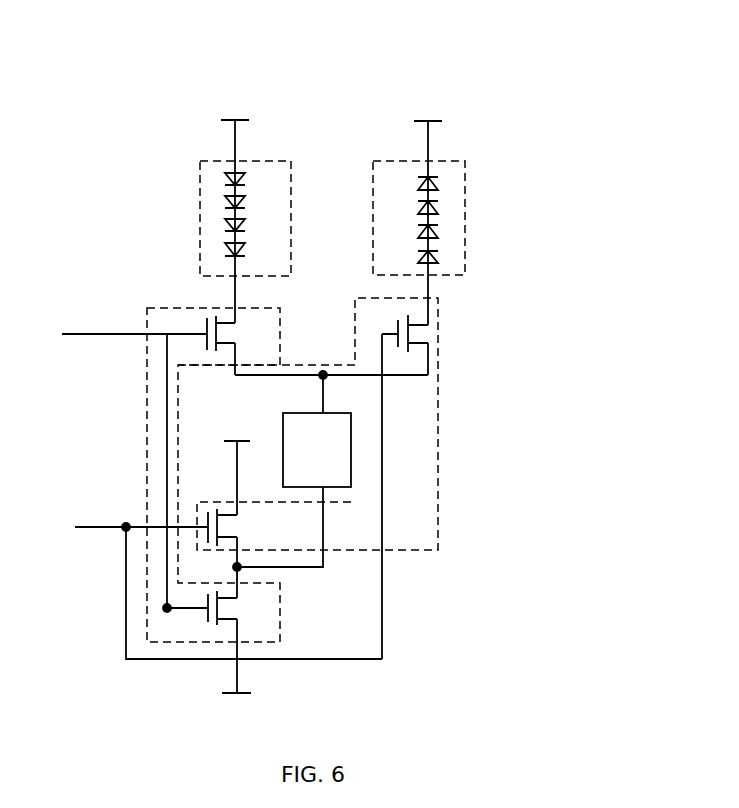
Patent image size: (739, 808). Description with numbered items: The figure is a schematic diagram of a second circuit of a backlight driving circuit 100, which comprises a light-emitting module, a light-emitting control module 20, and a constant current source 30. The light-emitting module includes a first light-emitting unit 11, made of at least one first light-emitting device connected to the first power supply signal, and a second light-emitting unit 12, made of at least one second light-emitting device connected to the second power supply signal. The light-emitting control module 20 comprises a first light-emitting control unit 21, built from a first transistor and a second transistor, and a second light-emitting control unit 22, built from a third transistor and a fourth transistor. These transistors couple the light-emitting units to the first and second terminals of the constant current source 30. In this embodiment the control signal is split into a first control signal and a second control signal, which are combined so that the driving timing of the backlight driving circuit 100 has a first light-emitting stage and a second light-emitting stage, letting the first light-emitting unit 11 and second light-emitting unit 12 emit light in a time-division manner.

The backlight driving circuit 100 is at (182, 54).
The first light-emitting unit 11 is at (200, 213).
The second light-emitting unit 12 is at (465, 212).
The light-emitting control module 20 is at (488, 584).
The first light-emitting control unit 21 is at (280, 633).
The second light-emitting control unit 22 is at (398, 550).
The constant current source 30 is at (351, 455).